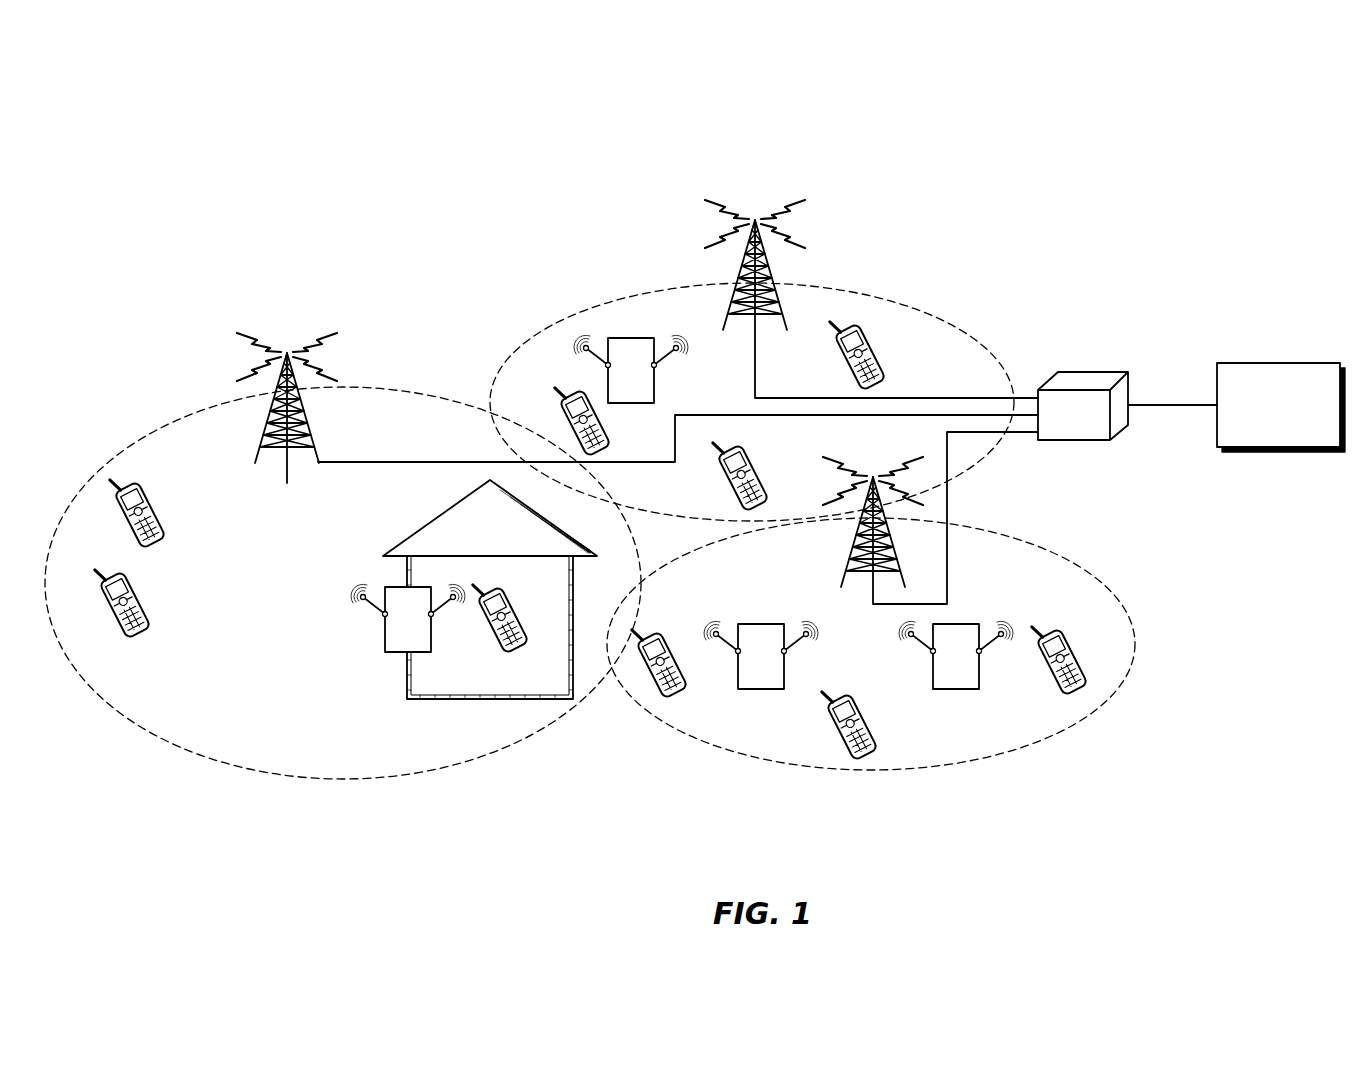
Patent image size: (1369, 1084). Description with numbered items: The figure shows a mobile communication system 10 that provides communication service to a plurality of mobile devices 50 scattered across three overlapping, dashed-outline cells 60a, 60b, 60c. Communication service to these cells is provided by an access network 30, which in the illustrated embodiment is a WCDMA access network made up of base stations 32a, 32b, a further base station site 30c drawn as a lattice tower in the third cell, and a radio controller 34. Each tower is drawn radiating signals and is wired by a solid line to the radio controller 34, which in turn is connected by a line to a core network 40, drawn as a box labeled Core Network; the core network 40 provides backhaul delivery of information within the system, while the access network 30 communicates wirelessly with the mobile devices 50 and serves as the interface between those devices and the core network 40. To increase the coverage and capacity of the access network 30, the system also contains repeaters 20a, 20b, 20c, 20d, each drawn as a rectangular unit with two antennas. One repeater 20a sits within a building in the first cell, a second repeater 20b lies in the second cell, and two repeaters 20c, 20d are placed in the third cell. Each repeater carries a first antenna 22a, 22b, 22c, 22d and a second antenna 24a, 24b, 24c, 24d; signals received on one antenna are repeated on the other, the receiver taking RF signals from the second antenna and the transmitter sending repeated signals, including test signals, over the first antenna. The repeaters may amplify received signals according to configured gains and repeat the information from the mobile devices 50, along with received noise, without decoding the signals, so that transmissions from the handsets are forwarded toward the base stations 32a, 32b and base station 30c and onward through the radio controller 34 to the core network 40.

The mobile communication system 10 is at (220, 146).
The repeater 20a is at (393, 587).
The repeater 20b is at (612, 336).
The repeater 20c is at (748, 624).
The repeater 20d is at (962, 624).
The first antenna 22a is at (375, 612).
The first antenna 22b is at (596, 358).
The first antenna 22c is at (727, 650).
The first antenna 22d is at (921, 650).
The second antenna 24a is at (446, 612).
The second antenna 24b is at (666, 358).
The second antenna 24c is at (797, 648).
The second antenna 24d is at (994, 650).
The access network 30 is at (496, 328).
The access network 30c is at (848, 555).
The base station 32a is at (312, 437).
The base station 32b is at (777, 273).
The radio controller 34 is at (1085, 372).
The core network 40 is at (1280, 363).
The mobile device 50 is at (150, 500).
The cell 60a is at (155, 432).
The cell 60b is at (717, 283).
The cell 60c is at (1073, 557).